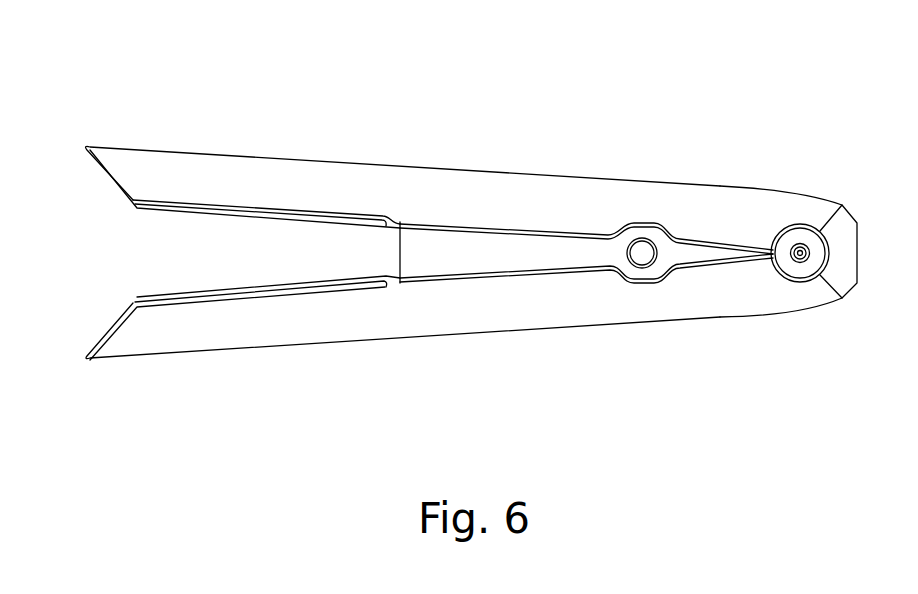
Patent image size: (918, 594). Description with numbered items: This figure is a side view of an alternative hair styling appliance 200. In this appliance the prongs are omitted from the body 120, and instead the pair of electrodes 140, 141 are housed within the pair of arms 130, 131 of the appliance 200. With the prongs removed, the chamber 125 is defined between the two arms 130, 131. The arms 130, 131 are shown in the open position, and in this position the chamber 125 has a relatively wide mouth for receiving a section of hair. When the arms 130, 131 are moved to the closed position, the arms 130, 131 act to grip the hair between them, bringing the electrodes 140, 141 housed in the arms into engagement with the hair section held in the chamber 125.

The hair styling appliance 200 is at (728, 98).
The body 120 is at (488, 252).
The chamber 125 is at (247, 262).
The arm 130 is at (328, 172).
The arm 131 is at (328, 318).
The electrode 140 is at (170, 200).
The electrode 141 is at (172, 303).